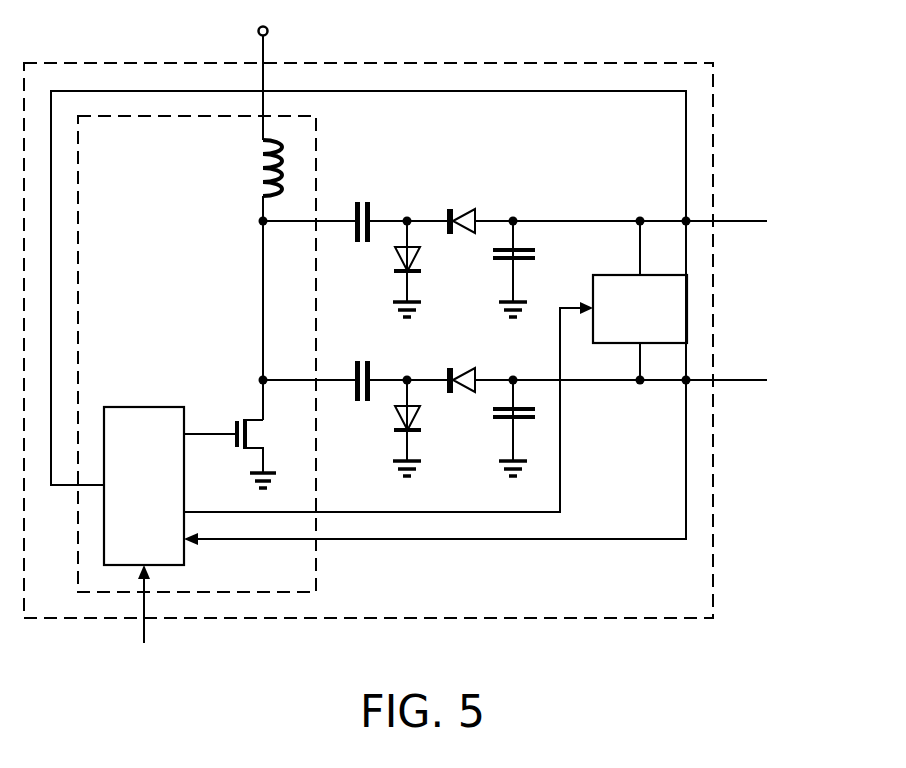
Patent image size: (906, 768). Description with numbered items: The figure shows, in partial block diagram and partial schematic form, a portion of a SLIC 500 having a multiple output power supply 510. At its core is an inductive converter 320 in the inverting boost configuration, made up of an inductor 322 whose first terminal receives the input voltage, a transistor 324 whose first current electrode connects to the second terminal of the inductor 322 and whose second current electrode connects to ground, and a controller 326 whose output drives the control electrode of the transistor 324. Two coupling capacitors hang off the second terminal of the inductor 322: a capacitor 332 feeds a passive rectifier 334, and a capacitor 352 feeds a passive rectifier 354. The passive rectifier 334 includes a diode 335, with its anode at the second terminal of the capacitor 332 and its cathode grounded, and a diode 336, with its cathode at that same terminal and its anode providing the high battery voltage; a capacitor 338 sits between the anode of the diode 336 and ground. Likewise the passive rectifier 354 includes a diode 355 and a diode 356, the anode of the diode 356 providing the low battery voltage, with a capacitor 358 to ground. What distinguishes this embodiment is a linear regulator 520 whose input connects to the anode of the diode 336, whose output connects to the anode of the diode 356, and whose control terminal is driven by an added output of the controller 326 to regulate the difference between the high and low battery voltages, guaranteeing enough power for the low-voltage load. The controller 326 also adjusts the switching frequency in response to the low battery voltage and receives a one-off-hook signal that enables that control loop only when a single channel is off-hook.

The SLIC 500 is at (438, 671).
The multiple output power supply 510 is at (642, 63).
The linear regulator 520 is at (604, 275).
The inductive converter 320 is at (318, 129).
The inductor 322 is at (262, 157).
The transistor 324 is at (250, 432).
The controller 326 is at (144, 407).
The capacitor 332 is at (359, 202).
The passive rectifier 334 is at (431, 192).
The diode 335 is at (396, 258).
The diode 336 is at (450, 235).
The capacitor 338 is at (530, 259).
The capacitor 352 is at (359, 361).
The passive rectifier 354 is at (431, 352).
The diode 355 is at (396, 418).
The diode 356 is at (450, 394).
The capacitor 358 is at (530, 418).